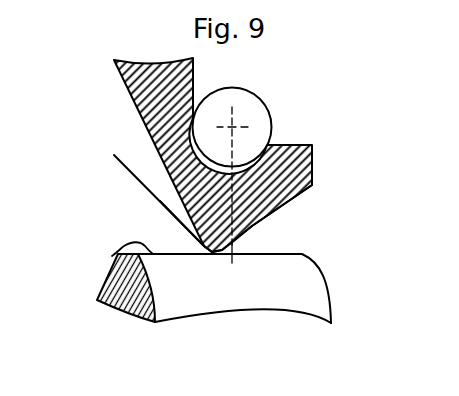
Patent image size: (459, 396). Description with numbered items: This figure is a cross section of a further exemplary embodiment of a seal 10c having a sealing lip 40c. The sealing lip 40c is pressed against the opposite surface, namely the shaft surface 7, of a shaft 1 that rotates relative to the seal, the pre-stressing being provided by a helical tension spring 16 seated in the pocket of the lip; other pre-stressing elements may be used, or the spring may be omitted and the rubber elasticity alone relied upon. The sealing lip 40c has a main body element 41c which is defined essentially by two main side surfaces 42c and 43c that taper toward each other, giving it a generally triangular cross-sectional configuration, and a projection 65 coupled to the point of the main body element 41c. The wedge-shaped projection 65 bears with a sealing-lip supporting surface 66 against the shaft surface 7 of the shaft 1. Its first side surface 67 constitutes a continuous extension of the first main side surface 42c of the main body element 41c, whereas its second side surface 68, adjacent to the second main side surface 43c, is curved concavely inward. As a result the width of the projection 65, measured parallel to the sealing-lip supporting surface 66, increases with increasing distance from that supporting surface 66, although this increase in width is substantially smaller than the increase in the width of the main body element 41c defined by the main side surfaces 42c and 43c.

The seal 10c is at (111, 102).
The helical tension spring 16 is at (247, 115).
The sealing lip 40c is at (147, 195).
The main body element 41c is at (263, 188).
The first main side surface 42c is at (177, 224).
The second main side surface 43c is at (273, 213).
The projection 65 is at (200, 242).
The sealing-lip supporting surface 66 is at (224, 256).
The first side surface 67 is at (229, 246).
The second side surface 68 is at (240, 234).
The shaft surface 7 is at (112, 256).
The shaft 1 is at (176, 297).